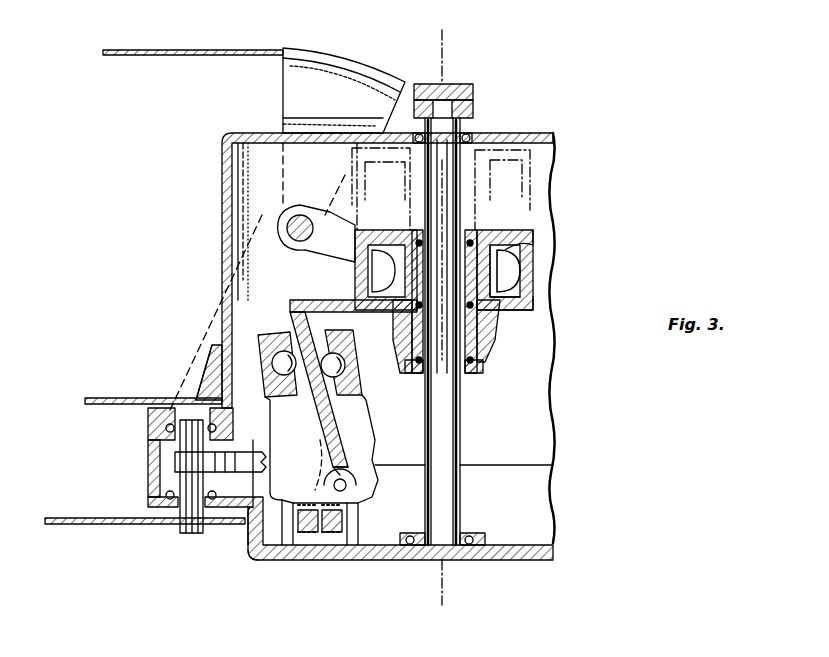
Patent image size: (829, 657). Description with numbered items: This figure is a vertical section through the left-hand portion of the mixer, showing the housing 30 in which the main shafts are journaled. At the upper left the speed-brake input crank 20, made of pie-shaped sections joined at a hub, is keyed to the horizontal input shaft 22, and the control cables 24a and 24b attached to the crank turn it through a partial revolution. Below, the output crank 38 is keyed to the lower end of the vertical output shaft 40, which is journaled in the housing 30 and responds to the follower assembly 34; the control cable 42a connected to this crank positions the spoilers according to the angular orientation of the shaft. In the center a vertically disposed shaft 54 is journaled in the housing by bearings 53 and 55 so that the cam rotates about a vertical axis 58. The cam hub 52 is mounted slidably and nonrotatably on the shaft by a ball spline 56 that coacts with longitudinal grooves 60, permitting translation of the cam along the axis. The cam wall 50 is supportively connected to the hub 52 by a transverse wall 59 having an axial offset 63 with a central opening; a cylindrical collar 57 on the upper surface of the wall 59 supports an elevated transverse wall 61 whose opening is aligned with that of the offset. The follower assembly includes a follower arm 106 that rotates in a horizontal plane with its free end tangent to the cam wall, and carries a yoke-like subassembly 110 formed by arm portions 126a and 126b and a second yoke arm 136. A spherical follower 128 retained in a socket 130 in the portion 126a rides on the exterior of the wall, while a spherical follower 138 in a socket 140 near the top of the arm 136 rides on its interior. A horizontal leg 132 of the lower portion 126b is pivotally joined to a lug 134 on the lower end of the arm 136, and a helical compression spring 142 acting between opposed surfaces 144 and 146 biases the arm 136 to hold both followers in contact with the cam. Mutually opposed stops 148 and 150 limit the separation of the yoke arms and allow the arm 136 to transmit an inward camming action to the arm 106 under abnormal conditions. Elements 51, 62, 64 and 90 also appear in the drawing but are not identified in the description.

The input crank 20 is at (290, 85).
The input shaft 22 is at (285, 215).
The control cable 24a is at (165, 50).
The control cable 24b is at (100, 398).
The housing 30 is at (222, 163).
The follower assembly 34 is at (238, 552).
The crank 38 is at (160, 525).
The output shaft 40 is at (190, 533).
The control cable 42a is at (78, 524).
The cam wall 50 is at (205, 376).
The link end 51 is at (355, 465).
The hub 52 is at (485, 368).
The bearing 53 is at (472, 533).
The shaft 54 is at (462, 426).
The bearing 55 is at (475, 133).
The ball spline 56 is at (470, 240).
The cylindrical collar 57 is at (533, 256).
The vertical axis 58 is at (445, 45).
The transverse wall 59 is at (535, 300).
The longitudinal grooves 60 is at (448, 200).
The transverse wall 61 is at (535, 240).
The phantom position 62 is at (465, 240).
The axial offset 63 is at (490, 356).
The cap 64 is at (473, 106).
The bearing cup 90 is at (522, 272).
The follower arm 106 is at (300, 455).
The yoke-like subassembly 110 is at (365, 502).
The arm portion 126a is at (212, 358).
The arm portion 126b is at (248, 520).
The spherical follower 128 is at (286, 350).
The socket 130 is at (262, 345).
The leg 132 is at (268, 556).
The lug 134 is at (321, 449).
The yoke arm 136 is at (355, 400).
The spherical follower 138 is at (342, 353).
The socket 140 is at (346, 368).
The helical compression spring 142 is at (360, 488).
The opposed surface 144 is at (305, 535).
The opposed surface 146 is at (335, 545).
The stop 148 is at (322, 540).
The stop 150 is at (345, 512).